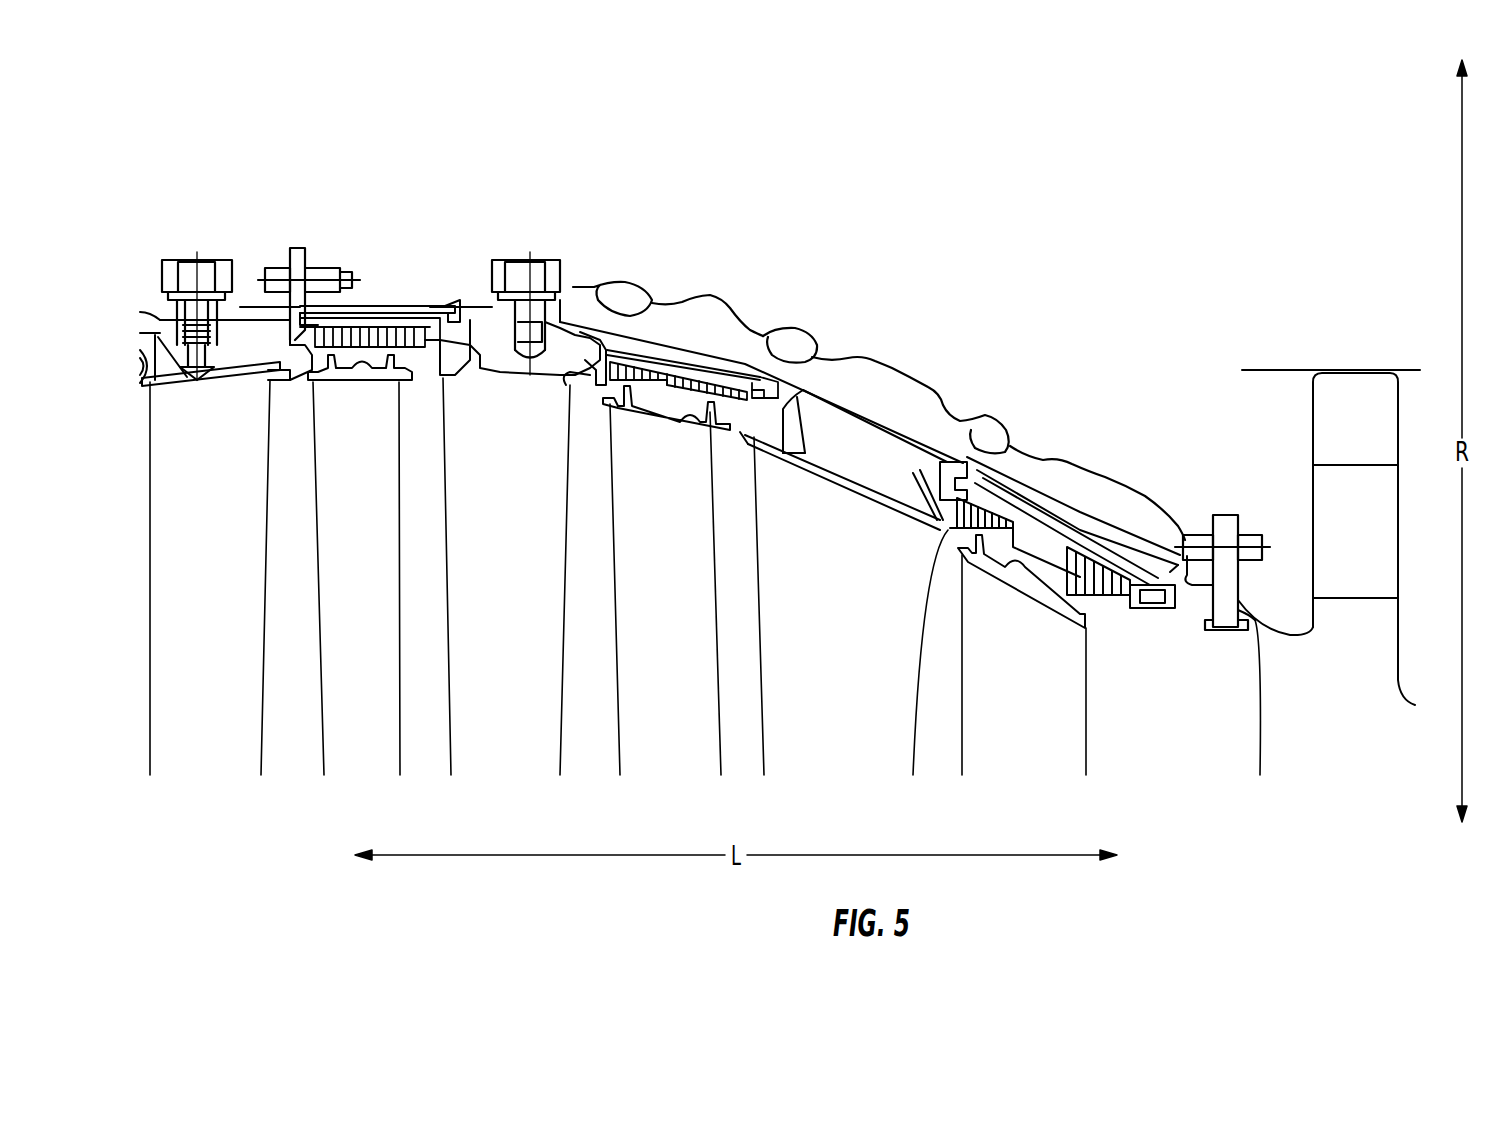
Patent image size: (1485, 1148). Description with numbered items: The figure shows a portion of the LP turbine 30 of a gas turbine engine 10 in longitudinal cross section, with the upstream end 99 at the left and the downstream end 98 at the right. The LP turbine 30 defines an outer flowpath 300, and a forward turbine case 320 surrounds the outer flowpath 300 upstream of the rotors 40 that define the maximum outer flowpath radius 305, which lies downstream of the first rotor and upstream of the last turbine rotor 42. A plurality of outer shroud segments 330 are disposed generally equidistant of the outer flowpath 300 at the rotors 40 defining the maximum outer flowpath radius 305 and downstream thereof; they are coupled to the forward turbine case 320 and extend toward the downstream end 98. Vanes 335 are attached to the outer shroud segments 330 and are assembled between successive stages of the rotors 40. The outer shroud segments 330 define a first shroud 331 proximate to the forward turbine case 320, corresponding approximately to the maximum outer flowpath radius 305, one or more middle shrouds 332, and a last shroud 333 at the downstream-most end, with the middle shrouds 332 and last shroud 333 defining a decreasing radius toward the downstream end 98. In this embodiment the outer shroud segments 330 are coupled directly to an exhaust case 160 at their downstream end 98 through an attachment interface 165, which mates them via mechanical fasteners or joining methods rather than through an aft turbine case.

The gas turbine engine 10 is at (893, 128).
The LP turbine 30 is at (889, 210).
The rotors 40 is at (344, 765).
The last turbine rotor 42 is at (1007, 750).
The downstream end 98 is at (1350, 770).
The upstream end 99 is at (125, 630).
The exhaust case 160 is at (1277, 647).
The attachment interface 165 is at (1226, 512).
The outer flowpath 300 is at (208, 390).
The maximum outer flowpath radius 305 is at (368, 378).
The forward turbine case 320 is at (241, 312).
The outer shroud segments 330 is at (383, 304).
The first shroud 331 is at (343, 314).
The middle shrouds 332 is at (650, 345).
The last shroud 333 is at (1128, 552).
The vanes 335 is at (521, 570).